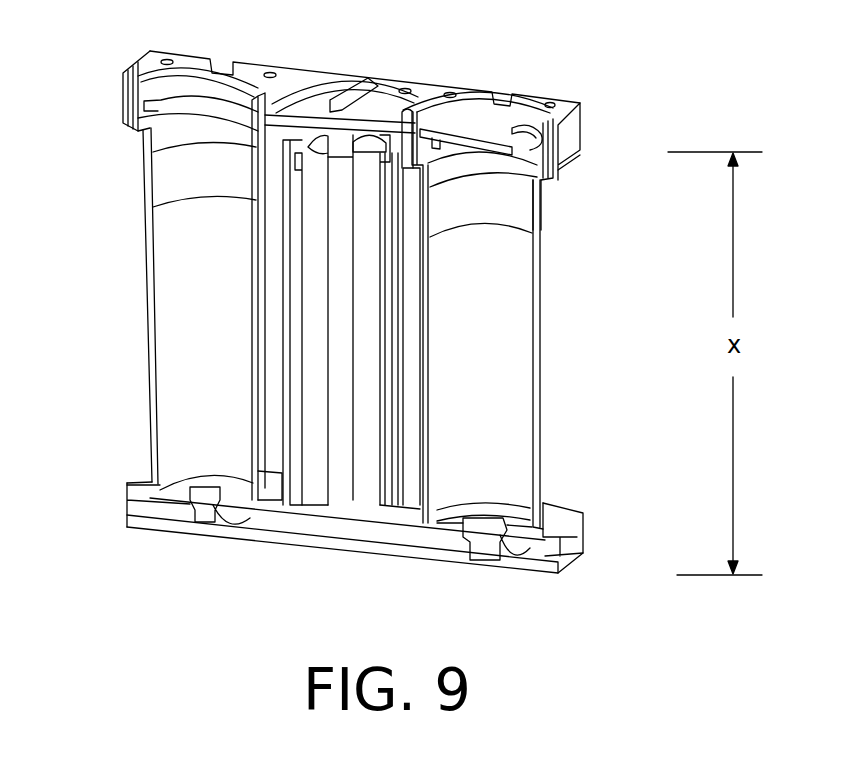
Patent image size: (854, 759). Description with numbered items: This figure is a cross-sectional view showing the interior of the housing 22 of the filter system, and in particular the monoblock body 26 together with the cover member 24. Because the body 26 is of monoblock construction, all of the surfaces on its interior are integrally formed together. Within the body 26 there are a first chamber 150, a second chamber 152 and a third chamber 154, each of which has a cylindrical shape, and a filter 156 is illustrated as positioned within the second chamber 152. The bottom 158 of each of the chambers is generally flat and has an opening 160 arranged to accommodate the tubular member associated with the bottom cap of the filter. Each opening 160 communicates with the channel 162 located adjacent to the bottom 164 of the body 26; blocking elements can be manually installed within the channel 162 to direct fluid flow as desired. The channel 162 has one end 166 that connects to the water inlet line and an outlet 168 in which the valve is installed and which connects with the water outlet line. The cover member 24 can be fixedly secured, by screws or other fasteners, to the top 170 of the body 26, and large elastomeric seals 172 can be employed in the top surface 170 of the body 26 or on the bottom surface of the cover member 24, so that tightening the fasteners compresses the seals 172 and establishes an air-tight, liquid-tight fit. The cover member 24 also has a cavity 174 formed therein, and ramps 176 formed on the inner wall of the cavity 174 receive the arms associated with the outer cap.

The housing 22 is at (606, 253).
The cover member 24 is at (583, 122).
The monoblock body 26 is at (543, 358).
The first chamber 150 is at (147, 270).
The second chamber 152 is at (298, 385).
The third chamber 154 is at (517, 327).
The filter 156 is at (373, 147).
The bottom 158 is at (157, 483).
The opening 160 is at (208, 500).
The channel 162 is at (165, 510).
The bottom 164 is at (305, 550).
The end 166 is at (127, 507).
The outlet 168 is at (562, 550).
The top 170 is at (582, 157).
The elastomeric seals 172 is at (548, 182).
The cavity 174 is at (522, 115).
The ramps 176 is at (458, 130).